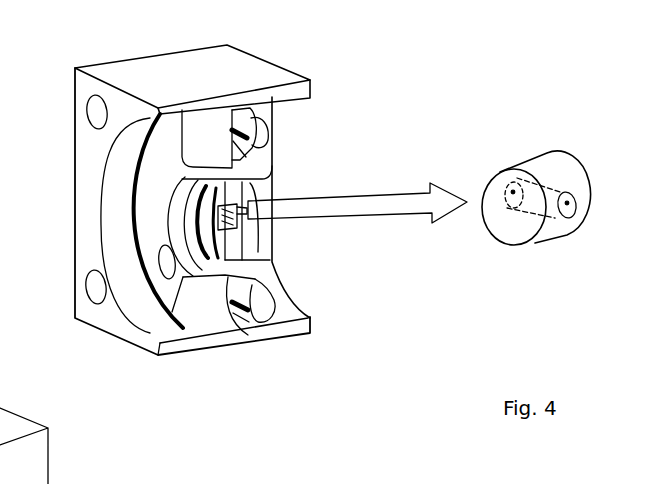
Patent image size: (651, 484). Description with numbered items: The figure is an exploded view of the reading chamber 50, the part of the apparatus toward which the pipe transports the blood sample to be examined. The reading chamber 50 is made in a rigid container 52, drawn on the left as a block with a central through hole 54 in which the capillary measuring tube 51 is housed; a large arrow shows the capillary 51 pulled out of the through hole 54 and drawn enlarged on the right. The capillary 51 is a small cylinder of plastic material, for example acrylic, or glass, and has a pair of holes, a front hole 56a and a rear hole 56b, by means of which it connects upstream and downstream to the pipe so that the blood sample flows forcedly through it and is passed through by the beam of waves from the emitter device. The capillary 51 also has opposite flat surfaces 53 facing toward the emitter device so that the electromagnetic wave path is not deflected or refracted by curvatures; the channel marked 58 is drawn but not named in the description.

The reading chamber 50 is at (198, 273).
The capillary measuring tube 51 is at (247, 205).
The rigid container 52 is at (90, 152).
The flat surfaces 53 is at (580, 163).
The central through hole 54 is at (188, 220).
The front hole 56a is at (503, 197).
The rear hole 56b is at (569, 212).
The channel 58 is at (532, 198).